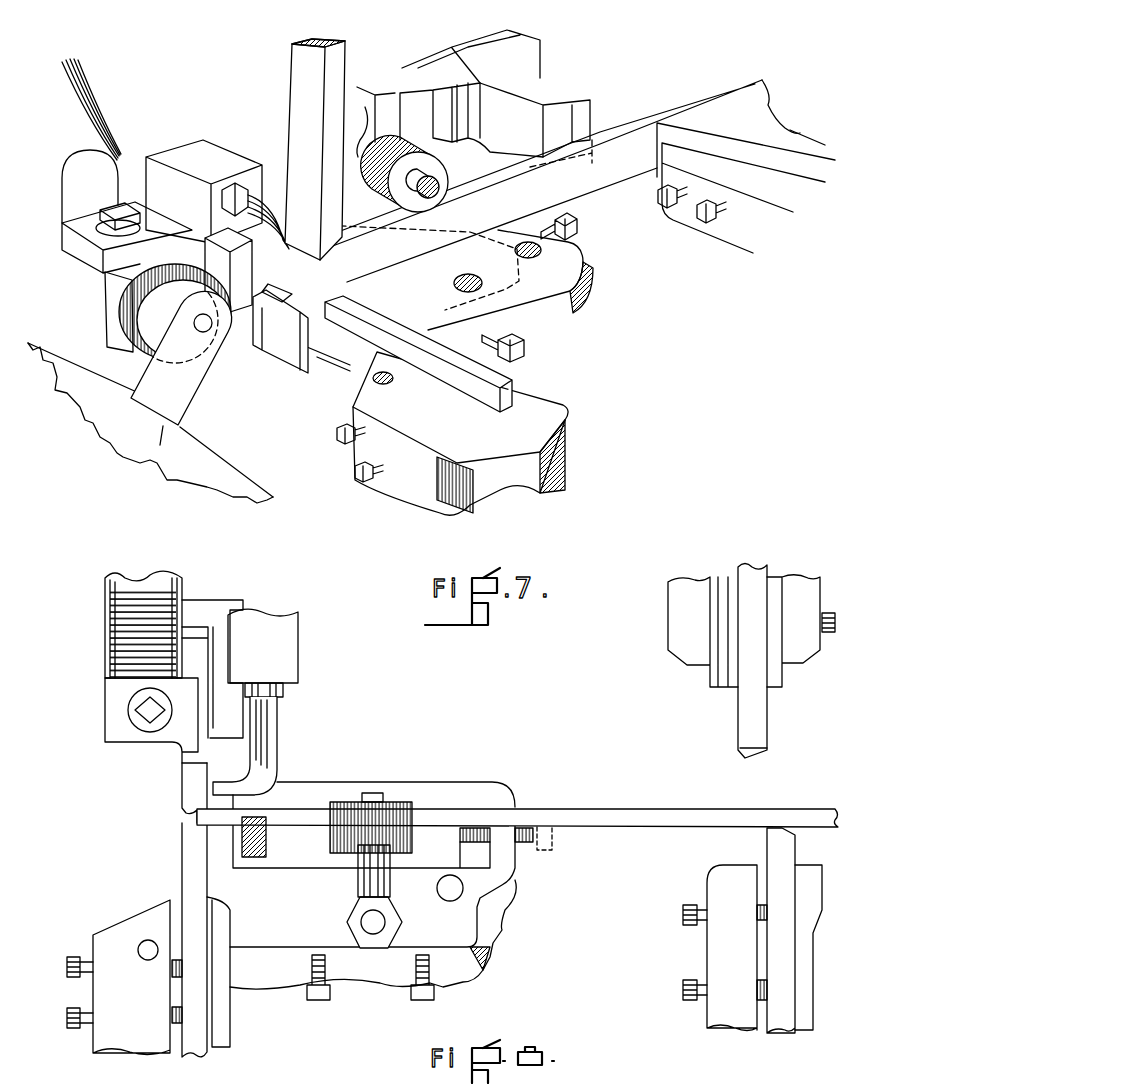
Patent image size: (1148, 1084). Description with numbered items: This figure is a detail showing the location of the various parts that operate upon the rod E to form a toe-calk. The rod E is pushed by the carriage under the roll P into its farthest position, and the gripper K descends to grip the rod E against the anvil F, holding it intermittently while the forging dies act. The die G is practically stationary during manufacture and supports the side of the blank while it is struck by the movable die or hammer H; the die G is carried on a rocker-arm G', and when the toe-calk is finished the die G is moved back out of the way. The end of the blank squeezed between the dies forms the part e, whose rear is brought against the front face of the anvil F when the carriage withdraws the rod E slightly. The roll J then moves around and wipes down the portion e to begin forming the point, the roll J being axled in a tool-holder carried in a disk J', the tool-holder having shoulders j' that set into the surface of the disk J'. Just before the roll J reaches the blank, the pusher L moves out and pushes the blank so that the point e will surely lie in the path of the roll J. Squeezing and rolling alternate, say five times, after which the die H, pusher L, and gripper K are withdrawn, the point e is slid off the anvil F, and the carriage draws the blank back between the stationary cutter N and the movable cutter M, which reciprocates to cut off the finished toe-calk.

In FIG. 7, the rocker-arm G' is at (127, 211).
In FIG. 8, the rocker-arm G' is at (129, 624).
In FIG. 7, the stationary die G is at (228, 270).
In FIG. 8, the stationary die G is at (174, 711).
In FIG. 7, the roll J is at (143, 312).
In FIG. 7, the disk J' is at (150, 423).
In FIG. 7, the shoulders j' is at (161, 434).
In FIG. 7, the gripper K is at (314, 166).
In FIG. 8, the gripper K is at (267, 842).
In FIG. 7, the pusher L is at (266, 212).
In FIG. 8, the pusher L is at (257, 702).
In FIG. 7, the roll P is at (397, 178).
In FIG. 8, the roll P is at (396, 803).
In FIG. 7, the movable cutter M is at (477, 93).
In FIG. 8, the movable cutter M is at (751, 661).
In FIG. 7, the stationary cutter N is at (678, 122).
In FIG. 8, the stationary cutter N is at (790, 848).
In FIG. 7, the rod E is at (620, 128).
In FIG. 8, the rod E is at (635, 814).
In FIG. 7, the movable die H is at (406, 308).
In FIG. 8, the movable die H is at (186, 878).
In FIG. 7, the anvil F is at (297, 354).
In FIG. 7, the point e is at (268, 335).